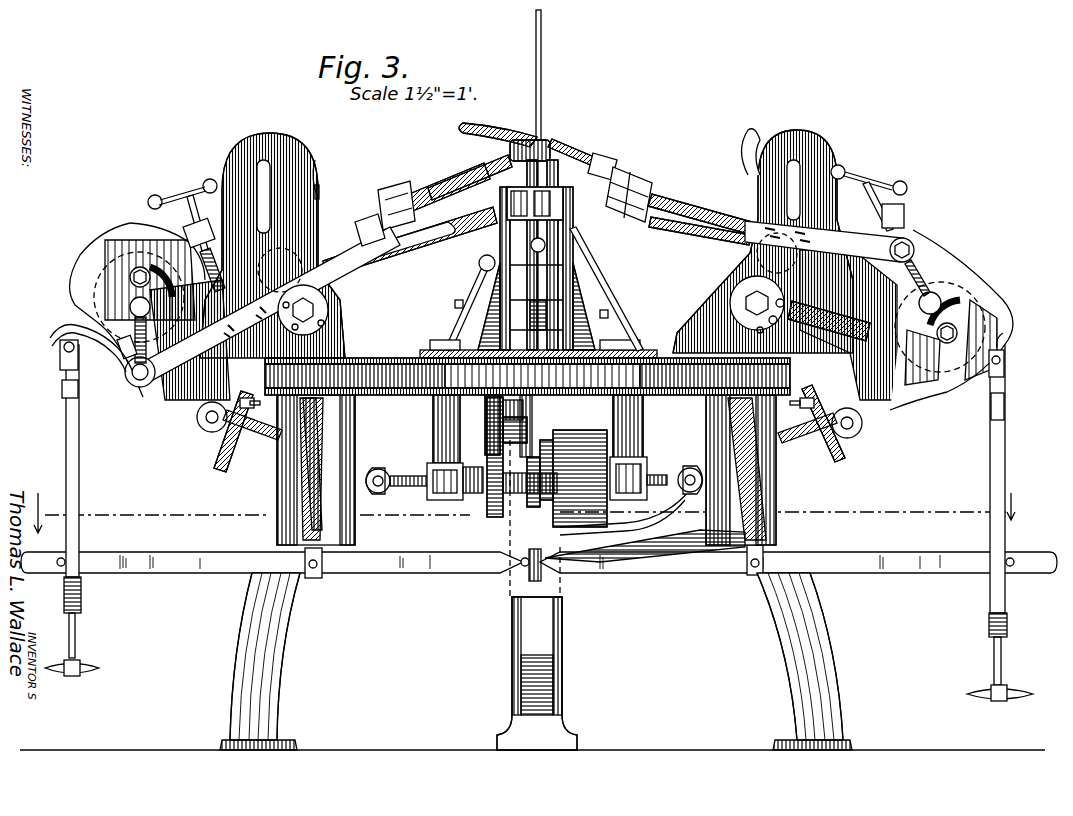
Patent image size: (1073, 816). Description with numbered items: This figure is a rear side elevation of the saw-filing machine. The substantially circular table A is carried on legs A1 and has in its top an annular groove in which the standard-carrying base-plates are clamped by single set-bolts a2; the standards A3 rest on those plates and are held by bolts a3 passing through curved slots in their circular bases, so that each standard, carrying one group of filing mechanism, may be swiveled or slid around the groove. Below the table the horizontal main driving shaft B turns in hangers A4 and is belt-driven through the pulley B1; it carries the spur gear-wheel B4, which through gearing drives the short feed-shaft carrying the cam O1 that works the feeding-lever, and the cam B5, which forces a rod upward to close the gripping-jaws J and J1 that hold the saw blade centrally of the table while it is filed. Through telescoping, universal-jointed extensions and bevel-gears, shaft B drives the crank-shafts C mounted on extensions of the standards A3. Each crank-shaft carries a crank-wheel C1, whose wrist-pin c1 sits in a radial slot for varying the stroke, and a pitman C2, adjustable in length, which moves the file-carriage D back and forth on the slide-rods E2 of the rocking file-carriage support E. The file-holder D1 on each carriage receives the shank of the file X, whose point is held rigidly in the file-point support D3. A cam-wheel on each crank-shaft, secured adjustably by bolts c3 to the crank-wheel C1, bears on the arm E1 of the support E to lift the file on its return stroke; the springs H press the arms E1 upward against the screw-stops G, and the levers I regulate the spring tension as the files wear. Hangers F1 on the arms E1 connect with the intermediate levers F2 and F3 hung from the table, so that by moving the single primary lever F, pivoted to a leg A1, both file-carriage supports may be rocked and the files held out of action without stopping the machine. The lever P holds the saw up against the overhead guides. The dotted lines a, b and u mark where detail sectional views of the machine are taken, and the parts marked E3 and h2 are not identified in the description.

The table A is at (465, 384).
The legs A1 is at (562, 645).
The standards A3 is at (248, 136).
The hangers A4 is at (662, 432).
The main or driving shaft B is at (398, 470).
The pulley B1 is at (640, 502).
The spur gear-wheel B4 is at (487, 510).
The cam B5 is at (528, 510).
The crank-shafts C is at (125, 385).
The crank-wheels C1 is at (955, 255).
The pitmen C2 is at (828, 212).
The file-carriages D is at (372, 210).
The file-holders D1 is at (630, 136).
The file-point supports D3 is at (440, 185).
The file-carriage supports E is at (740, 280).
The arms E1 is at (846, 300).
The slide-rods E2 is at (662, 256).
The strut E3 is at (285, 492).
The primary lever F is at (778, 495).
The hangers F1 is at (70, 495).
The intermediate lever F2 is at (847, 568).
The intermediate lever F3 is at (183, 569).
The screws G is at (180, 218).
The springs H is at (142, 450).
The levers I is at (738, 140).
The gripping-jaw J is at (482, 258).
The gripping-jaw J1 is at (583, 248).
The cam O1 is at (508, 431).
The lever P is at (542, 100).
The files X is at (475, 128).
The dotted section line a is at (236, 262).
The set-bolts a2 is at (242, 400).
The bolts a3 is at (360, 345).
The dotted section line b is at (220, 232).
The wrist-pins c1 is at (915, 245).
The bolts c3 is at (968, 280).
The link h2 is at (878, 468).
The section line u is at (525, 513).